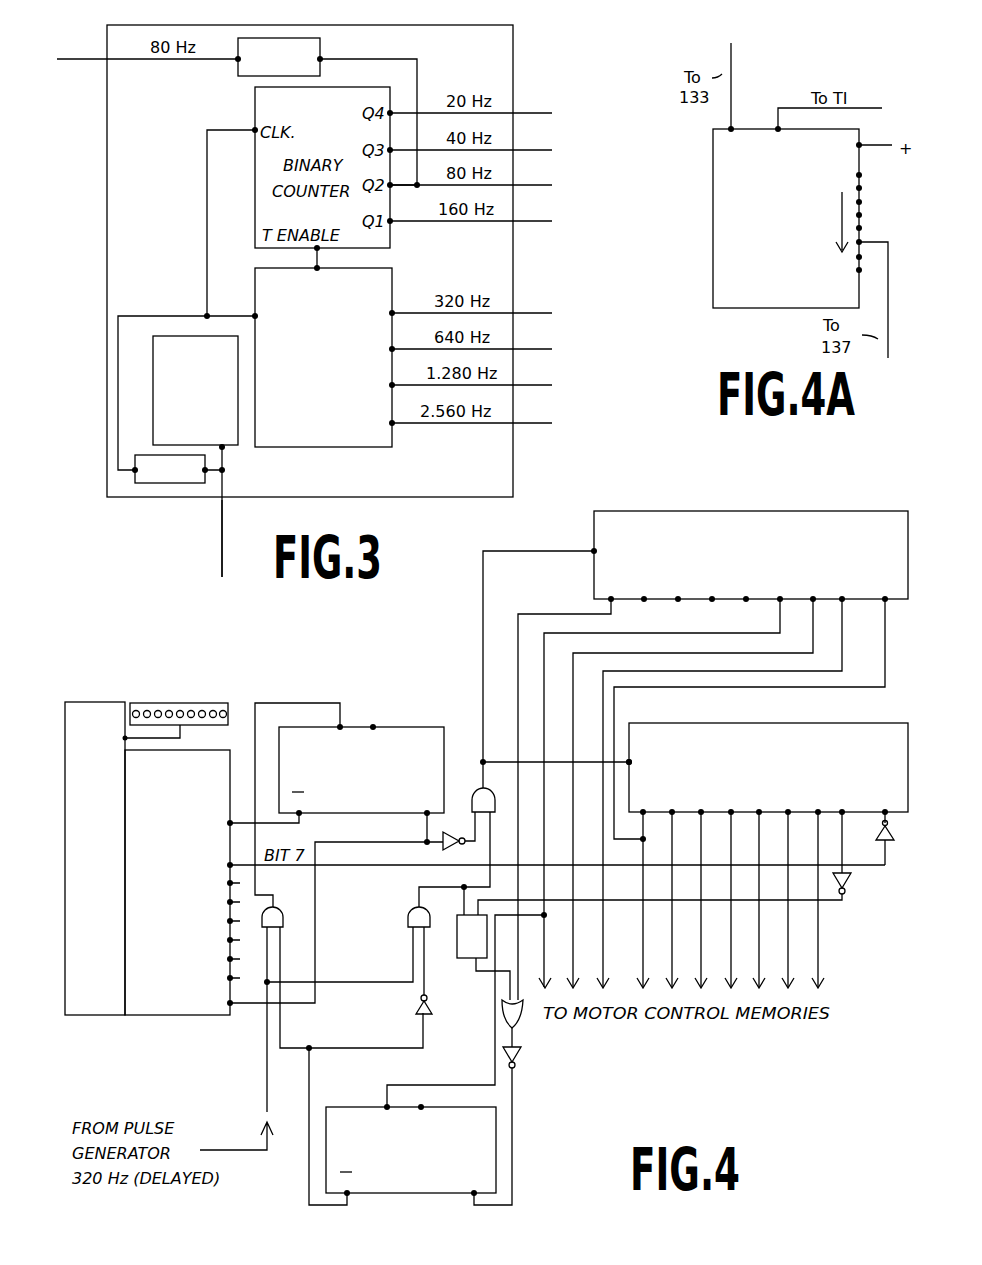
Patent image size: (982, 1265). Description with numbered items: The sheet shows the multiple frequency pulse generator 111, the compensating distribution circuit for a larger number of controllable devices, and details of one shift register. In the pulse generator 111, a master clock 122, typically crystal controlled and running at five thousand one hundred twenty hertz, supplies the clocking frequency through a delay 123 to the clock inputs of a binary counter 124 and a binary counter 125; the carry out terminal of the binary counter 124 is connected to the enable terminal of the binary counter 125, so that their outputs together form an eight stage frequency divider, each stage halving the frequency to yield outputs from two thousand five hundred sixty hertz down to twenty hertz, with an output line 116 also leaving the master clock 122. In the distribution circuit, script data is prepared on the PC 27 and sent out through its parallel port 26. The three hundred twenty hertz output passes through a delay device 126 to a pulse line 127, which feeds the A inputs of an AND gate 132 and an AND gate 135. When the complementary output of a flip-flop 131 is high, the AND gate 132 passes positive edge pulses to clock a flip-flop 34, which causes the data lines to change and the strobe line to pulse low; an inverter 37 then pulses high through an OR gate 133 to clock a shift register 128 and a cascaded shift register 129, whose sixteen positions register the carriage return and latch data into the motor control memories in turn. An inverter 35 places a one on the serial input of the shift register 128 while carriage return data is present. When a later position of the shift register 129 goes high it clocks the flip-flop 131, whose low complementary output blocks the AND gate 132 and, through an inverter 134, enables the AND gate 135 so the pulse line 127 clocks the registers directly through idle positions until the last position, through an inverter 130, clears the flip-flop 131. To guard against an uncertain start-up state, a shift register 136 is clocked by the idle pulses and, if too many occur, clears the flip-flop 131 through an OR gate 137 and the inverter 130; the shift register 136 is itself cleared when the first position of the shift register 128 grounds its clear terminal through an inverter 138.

In FIG. 3, the pulse generator 111 is at (515, 58).
In FIG. 3, the delay device 126 is at (246, 80).
In FIG. 3, the binary counter 125 is at (251, 171).
In FIG. 3, the binary counter 124 is at (255, 282).
In FIG. 3, the delay 123 is at (145, 452).
In FIG. 3, the master clock 122 is at (226, 452).
In FIG. 3, the master clock output line 116 is at (224, 515).
In FIG. 4A, the shift register 136 is at (732, 308).
In FIG. 4, the shift register 136 is at (456, 965).
In FIG. 4, the PC 27 is at (74, 705).
In FIG. 4, the parallel port 26 is at (160, 1018).
In FIG. 4, the flip-flop 34 is at (430, 722).
In FIG. 4, the inverter 37 is at (450, 848).
In FIG. 4, the OR gate 133 is at (472, 790).
In FIG. 4, the shift register 129 is at (752, 505).
In FIG. 4, the shift register 128 is at (758, 718).
In FIG. 4, the inverter 138 is at (846, 884).
In FIG. 4, the inverter 35 is at (895, 832).
In FIG. 4, the AND gate 132 is at (290, 898).
In FIG. 4, the AND gate 135 is at (405, 908).
In FIG. 4, the inverter 134 is at (433, 1005).
In FIG. 4, the OR gate 137 is at (502, 1017).
In FIG. 4, the inverter 130 is at (520, 1058).
In FIG. 4, the flip-flop 131 is at (366, 1104).
In FIG. 4, the pulse line 127 is at (260, 1082).